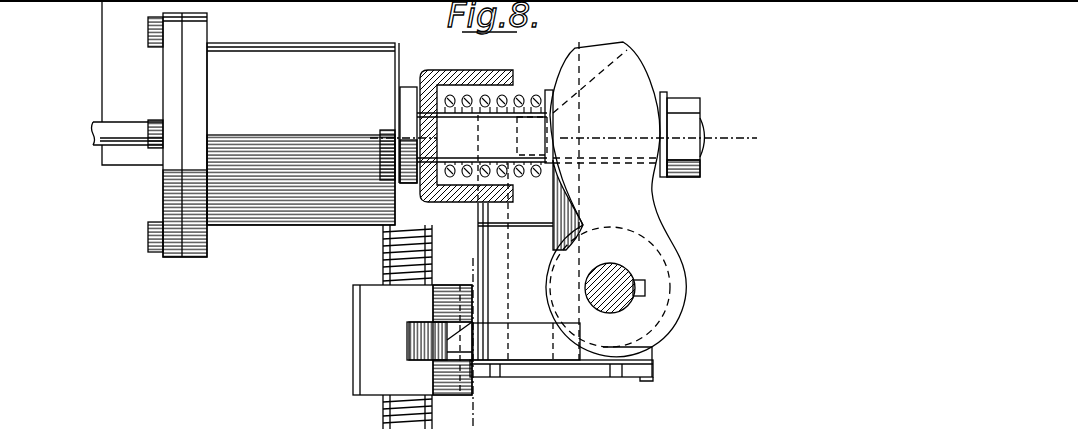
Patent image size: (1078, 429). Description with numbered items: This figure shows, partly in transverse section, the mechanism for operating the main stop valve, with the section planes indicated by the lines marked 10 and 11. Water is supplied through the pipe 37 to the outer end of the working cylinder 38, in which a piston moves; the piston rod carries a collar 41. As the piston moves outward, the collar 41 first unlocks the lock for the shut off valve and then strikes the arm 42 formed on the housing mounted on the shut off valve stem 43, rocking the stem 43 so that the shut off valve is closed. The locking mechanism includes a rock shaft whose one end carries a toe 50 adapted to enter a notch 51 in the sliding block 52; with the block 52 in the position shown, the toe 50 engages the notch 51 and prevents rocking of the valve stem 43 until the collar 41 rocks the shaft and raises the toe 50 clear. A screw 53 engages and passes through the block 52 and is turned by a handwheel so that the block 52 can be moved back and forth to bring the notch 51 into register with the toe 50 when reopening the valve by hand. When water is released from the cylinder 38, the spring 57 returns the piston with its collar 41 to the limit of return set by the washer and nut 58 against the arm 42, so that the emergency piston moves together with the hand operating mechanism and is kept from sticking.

The pipe 37 is at (122, 135).
The working cylinder 38 is at (305, 193).
The collar 41 is at (483, 70).
The spring 57 is at (520, 97).
The arm 42 is at (617, 78).
The washer and nut 58 is at (688, 98).
The section line 10- 10 is at (370, 130).
The shut off valve stem 43 is at (620, 300).
The toe 50 is at (467, 350).
The section line 11- 11 is at (473, 262).
The sliding block 52 is at (378, 303).
The notch 51 is at (415, 335).
The screw 53 is at (385, 415).